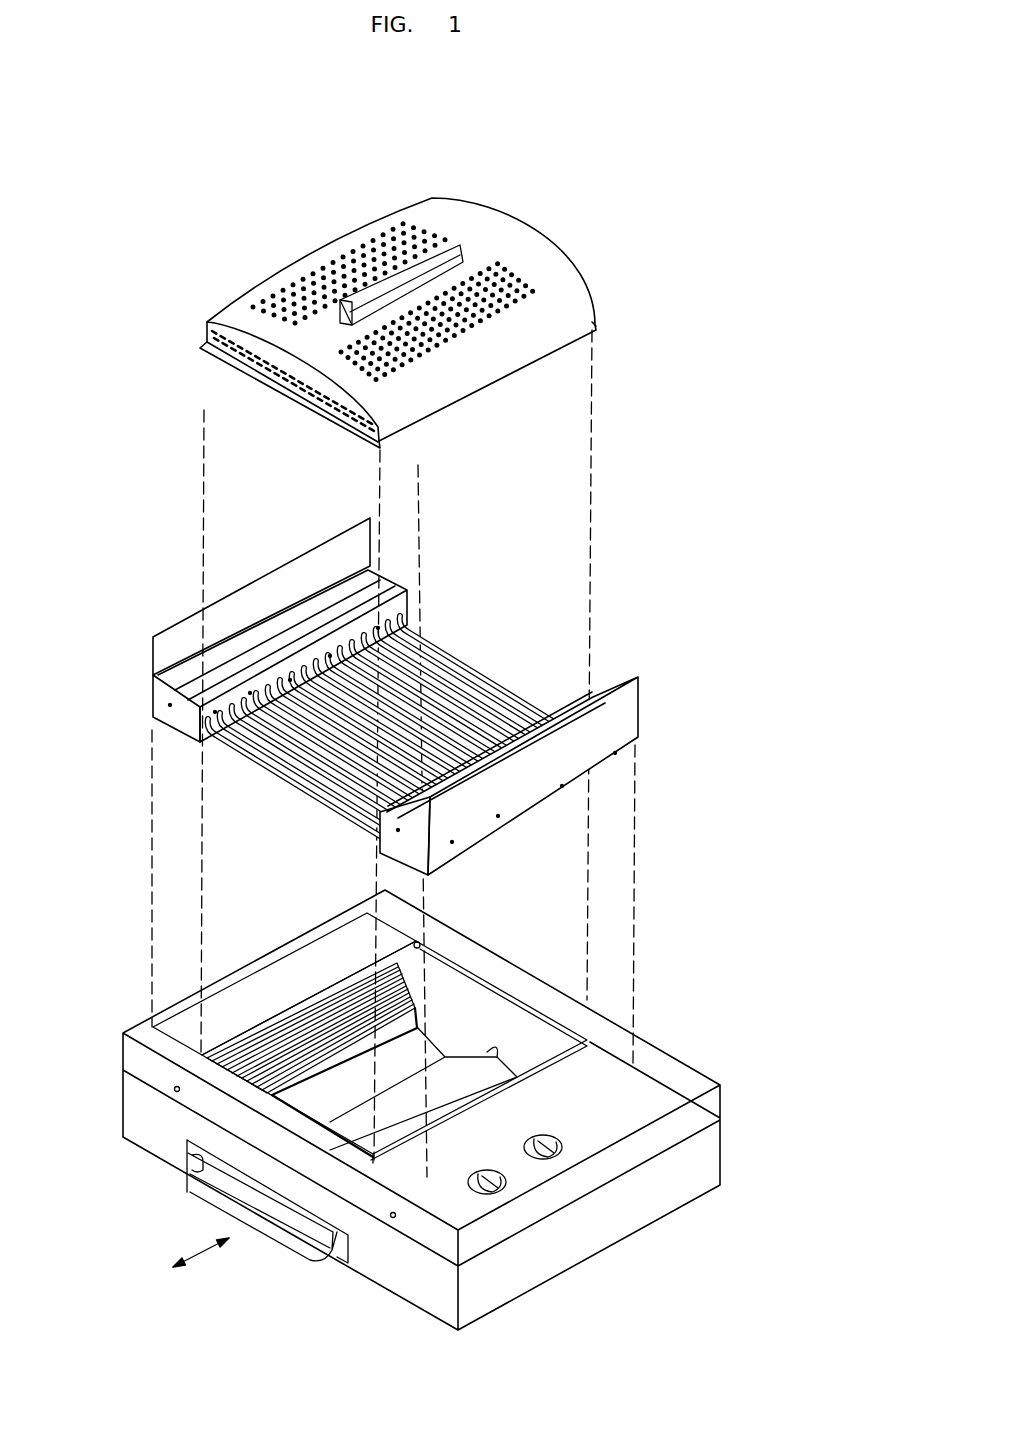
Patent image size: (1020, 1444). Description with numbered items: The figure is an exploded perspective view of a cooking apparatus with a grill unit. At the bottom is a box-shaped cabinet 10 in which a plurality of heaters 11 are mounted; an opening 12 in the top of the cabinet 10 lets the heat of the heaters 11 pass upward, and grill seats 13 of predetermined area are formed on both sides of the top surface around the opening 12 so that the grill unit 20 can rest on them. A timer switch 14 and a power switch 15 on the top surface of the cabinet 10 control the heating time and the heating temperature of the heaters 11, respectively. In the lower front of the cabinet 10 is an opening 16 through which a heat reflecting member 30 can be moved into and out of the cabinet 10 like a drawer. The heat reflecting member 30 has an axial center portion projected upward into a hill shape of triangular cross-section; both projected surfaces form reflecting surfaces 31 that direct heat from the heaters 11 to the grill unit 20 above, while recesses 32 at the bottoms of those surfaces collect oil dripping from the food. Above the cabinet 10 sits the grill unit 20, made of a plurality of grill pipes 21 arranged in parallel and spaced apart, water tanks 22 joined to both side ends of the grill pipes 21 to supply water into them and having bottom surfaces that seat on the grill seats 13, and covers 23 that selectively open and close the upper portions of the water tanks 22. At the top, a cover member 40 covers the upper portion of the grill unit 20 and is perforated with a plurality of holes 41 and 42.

The cabinet 10 is at (427, 1121).
The heaters 11 is at (263, 1050).
The opening 12 is at (475, 1058).
The grill seats 13 is at (287, 968).
The timer switch 14 is at (500, 1187).
The power switch 15 is at (553, 1150).
The opening 16 is at (333, 1262).
The grill unit 20 is at (363, 691).
The grill pipes 21 is at (290, 800).
The water tanks 22 is at (176, 716).
The covers 23 is at (320, 543).
The heat reflecting member 30 is at (233, 1248).
The reflecting surfaces 31 is at (500, 1073).
The recesses 32 is at (348, 1092).
The cover member 40 is at (398, 318).
The holes 41 is at (297, 383).
The holes 42 is at (337, 262).